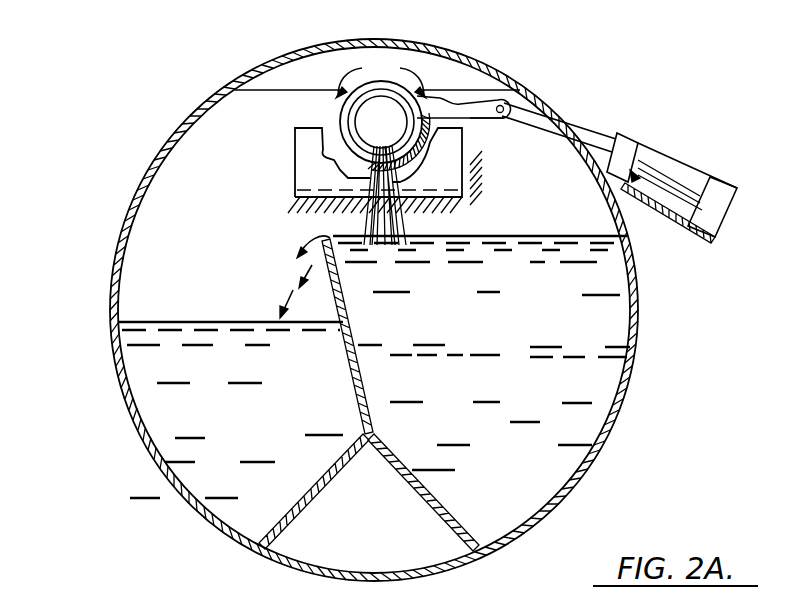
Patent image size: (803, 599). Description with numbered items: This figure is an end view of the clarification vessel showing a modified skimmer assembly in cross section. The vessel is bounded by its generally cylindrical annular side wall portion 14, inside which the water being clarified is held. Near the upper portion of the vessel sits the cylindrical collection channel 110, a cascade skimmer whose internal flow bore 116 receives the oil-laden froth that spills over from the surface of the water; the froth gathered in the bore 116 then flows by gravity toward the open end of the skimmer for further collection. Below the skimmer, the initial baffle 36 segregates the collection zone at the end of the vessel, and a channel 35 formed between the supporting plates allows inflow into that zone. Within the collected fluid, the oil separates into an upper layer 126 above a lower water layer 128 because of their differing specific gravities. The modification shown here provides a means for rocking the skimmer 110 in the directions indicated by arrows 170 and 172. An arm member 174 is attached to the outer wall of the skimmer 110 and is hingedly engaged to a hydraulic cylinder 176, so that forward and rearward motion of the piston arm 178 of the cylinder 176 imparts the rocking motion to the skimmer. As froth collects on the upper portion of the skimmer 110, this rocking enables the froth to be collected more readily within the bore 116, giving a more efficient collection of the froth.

The annular side wall portion 14 is at (113, 353).
The channel 35 is at (417, 537).
The initial baffle 36 is at (250, 120).
The cylindrical collection channel 110 is at (477, 122).
The internal flow bore 116 is at (398, 131).
The upper layer of oil 126 is at (595, 282).
The lower layer of water 128 is at (580, 393).
The arrow 170 is at (362, 68).
The arrow 172 is at (420, 70).
The arm member 174 is at (457, 107).
The hydraulic cylinder 176 is at (672, 177).
The piston arm 178 is at (603, 143).